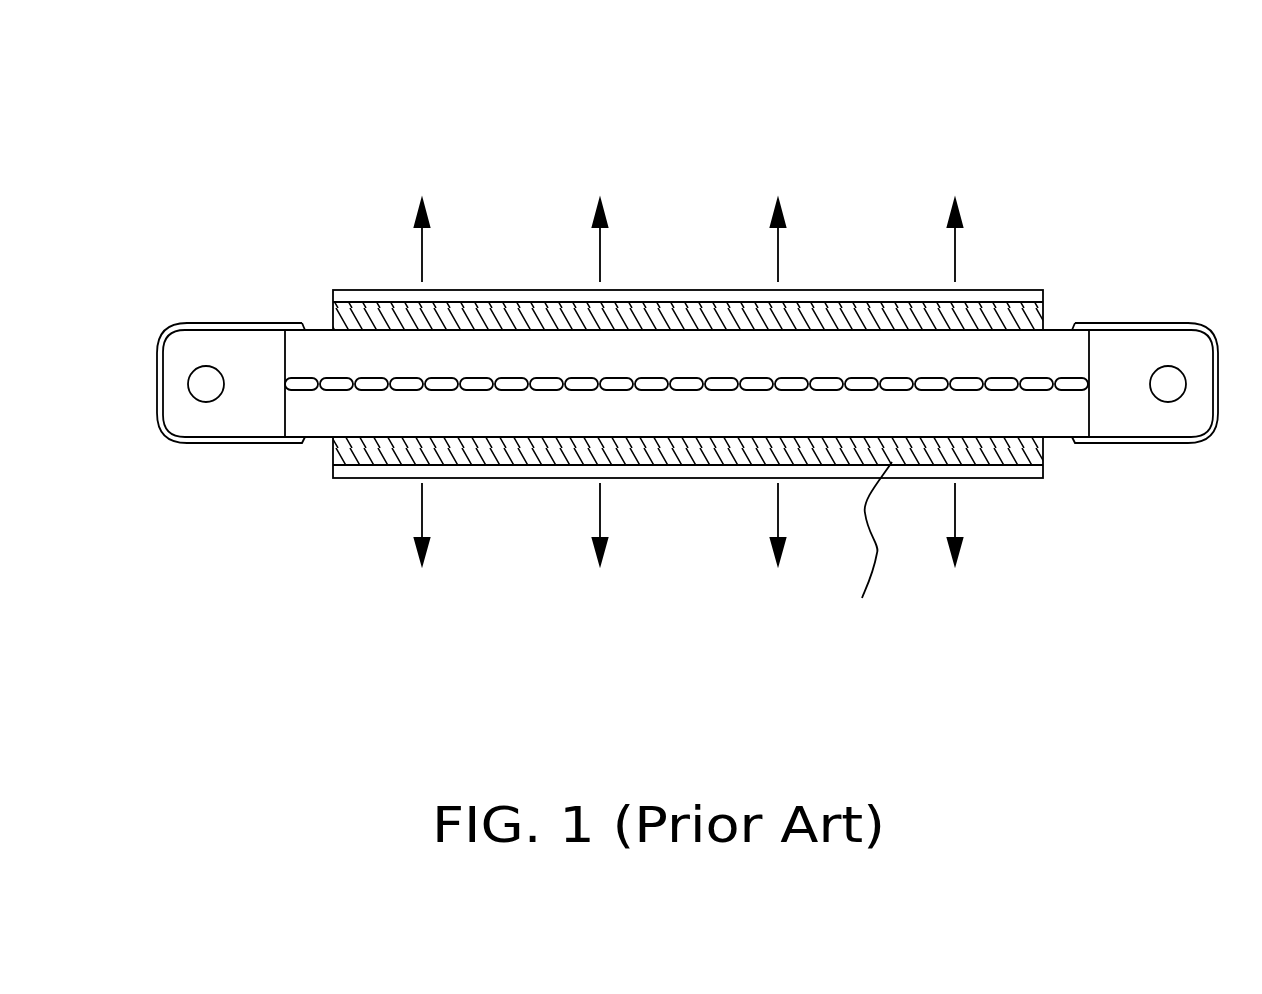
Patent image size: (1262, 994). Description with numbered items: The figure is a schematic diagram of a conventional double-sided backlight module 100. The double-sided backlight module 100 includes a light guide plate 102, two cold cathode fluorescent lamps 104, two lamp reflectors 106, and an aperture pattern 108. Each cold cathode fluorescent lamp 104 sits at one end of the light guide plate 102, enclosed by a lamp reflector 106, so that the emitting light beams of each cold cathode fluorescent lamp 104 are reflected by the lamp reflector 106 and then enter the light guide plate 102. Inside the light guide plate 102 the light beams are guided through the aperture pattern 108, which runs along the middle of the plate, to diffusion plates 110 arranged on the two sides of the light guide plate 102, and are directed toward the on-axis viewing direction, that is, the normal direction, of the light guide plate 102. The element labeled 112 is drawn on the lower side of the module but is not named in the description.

The double-sided backlight module 100 is at (1193, 69).
The light guide plate 102 is at (538, 418).
The cold cathode fluorescent lamp 104 is at (205, 402).
The lamp reflector 106 is at (233, 445).
The aperture pattern 108 is at (728, 392).
The diffusion plate 110 is at (343, 313).
The heat conductive plate (lower) 112 is at (892, 462).